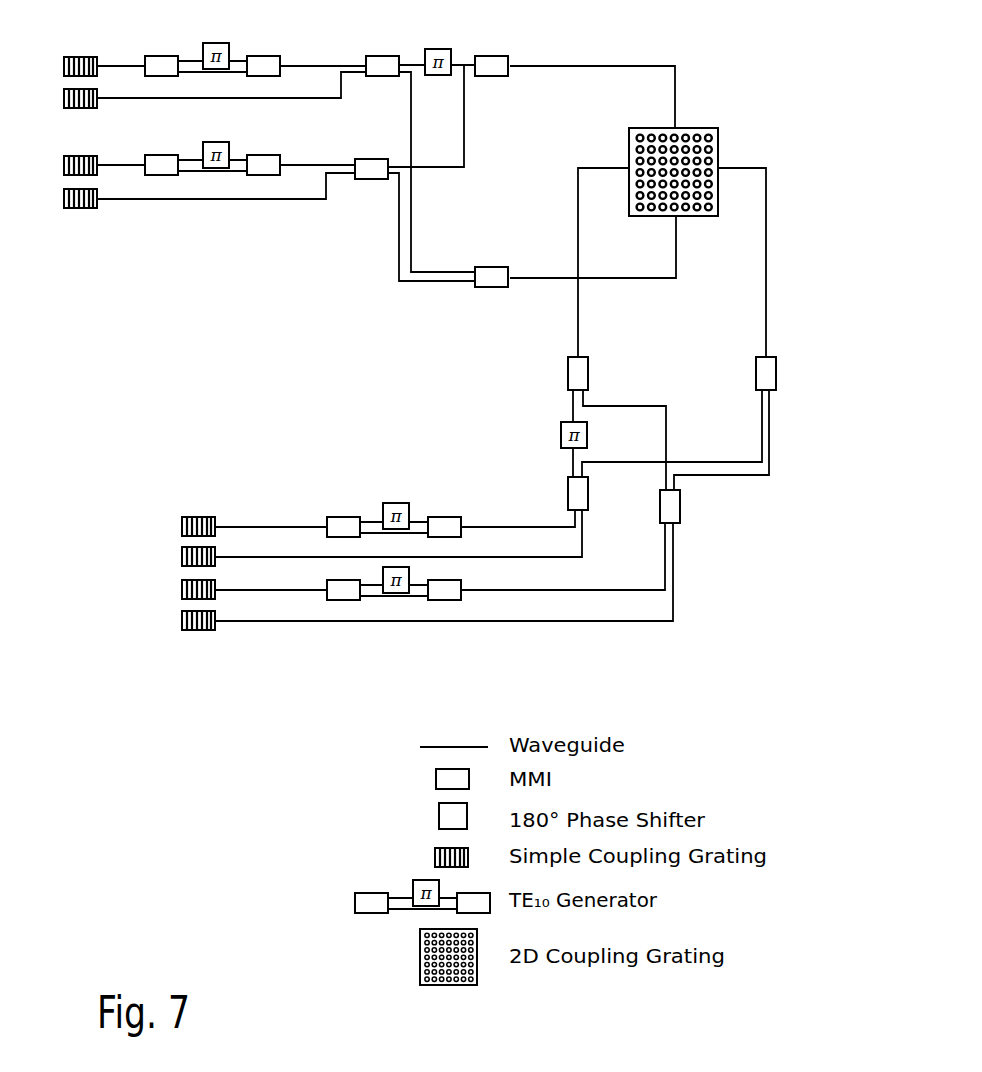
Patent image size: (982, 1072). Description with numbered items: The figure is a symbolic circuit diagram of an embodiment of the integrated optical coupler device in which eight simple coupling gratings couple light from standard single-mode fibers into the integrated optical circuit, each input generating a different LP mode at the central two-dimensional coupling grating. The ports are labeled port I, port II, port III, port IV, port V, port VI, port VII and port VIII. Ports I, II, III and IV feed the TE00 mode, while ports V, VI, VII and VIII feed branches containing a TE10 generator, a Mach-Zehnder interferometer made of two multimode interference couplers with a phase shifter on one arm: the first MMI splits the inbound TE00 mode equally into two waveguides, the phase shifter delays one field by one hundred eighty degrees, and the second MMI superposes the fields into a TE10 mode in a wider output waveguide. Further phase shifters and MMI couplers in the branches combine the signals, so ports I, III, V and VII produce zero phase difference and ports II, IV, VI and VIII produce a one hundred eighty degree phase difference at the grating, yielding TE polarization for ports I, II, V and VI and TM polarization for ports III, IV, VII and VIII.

The port I is at (187, 621).
The port II is at (186, 557).
The port III is at (63, 199).
The port IV is at (62, 97).
The port V is at (182, 590).
The port VI is at (181, 527).
The port VII is at (57, 165).
The port VIII is at (55, 67).